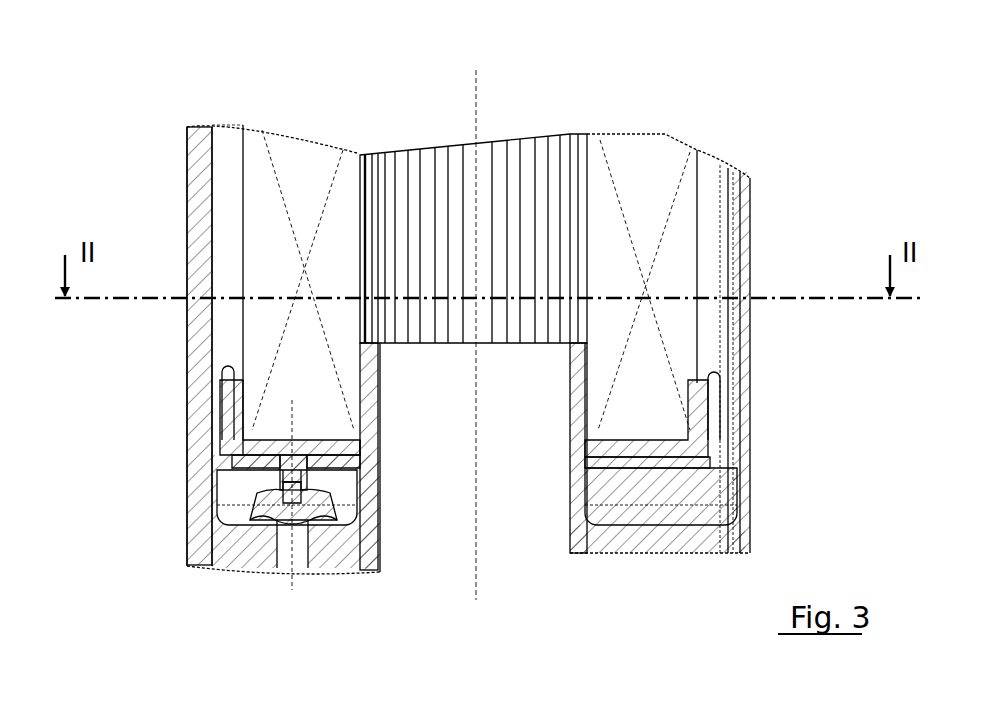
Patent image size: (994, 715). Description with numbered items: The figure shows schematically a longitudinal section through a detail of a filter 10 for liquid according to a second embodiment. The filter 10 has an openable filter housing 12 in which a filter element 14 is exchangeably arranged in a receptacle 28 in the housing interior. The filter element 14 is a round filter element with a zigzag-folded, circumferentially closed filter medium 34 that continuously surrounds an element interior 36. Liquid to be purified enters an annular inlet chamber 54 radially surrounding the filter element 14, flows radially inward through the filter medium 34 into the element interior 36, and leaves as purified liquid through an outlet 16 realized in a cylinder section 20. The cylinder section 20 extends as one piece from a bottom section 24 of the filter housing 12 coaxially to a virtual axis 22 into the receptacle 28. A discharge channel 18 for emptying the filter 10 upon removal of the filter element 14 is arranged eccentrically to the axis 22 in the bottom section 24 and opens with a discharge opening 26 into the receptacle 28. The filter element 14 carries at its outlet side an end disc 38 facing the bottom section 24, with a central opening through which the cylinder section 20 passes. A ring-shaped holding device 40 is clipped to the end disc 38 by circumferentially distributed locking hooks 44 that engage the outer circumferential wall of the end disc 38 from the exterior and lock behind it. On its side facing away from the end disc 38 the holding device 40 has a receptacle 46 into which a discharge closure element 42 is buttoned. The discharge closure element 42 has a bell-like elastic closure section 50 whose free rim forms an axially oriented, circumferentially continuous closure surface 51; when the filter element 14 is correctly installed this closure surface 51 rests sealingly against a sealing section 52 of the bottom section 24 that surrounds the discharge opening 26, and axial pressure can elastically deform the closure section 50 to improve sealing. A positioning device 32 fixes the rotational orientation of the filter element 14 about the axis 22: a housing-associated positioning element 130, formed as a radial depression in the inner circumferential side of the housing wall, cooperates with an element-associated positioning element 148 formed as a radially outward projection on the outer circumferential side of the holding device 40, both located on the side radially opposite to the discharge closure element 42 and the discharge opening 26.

The filter 10 is at (76, 60).
The filter housing 12 is at (186, 174).
The filter element 14 is at (323, 140).
The outlet 16 is at (474, 530).
The discharge channel 18 is at (292, 560).
The cylinder section 20 is at (573, 475).
The axis 22 is at (472, 90).
The bottom section 24 is at (587, 556).
The discharge opening 26 is at (276, 565).
The receptacle 28 is at (702, 190).
The positioning device 32 is at (744, 388).
The filter medium 34 is at (620, 165).
The element interior 36 is at (415, 235).
The end disc 38 is at (700, 437).
The holding device 40 is at (714, 458).
The discharge closure element 42 is at (245, 500).
The locking hooks 44 is at (228, 378).
The receptacle 46 is at (230, 470).
The closure section 50 is at (252, 518).
The closure surface 51 is at (335, 522).
The sealing section 52 is at (318, 482).
The annular inlet chamber 54 is at (230, 160).
The housing-associated positioning element 130 is at (730, 352).
The element-associated positioning element 148 is at (712, 373).